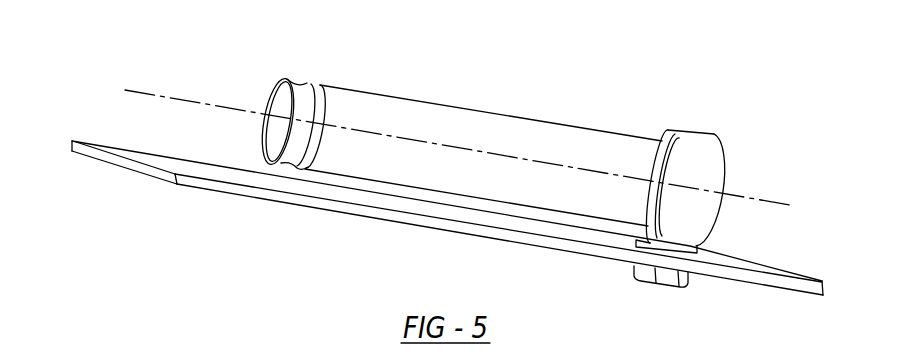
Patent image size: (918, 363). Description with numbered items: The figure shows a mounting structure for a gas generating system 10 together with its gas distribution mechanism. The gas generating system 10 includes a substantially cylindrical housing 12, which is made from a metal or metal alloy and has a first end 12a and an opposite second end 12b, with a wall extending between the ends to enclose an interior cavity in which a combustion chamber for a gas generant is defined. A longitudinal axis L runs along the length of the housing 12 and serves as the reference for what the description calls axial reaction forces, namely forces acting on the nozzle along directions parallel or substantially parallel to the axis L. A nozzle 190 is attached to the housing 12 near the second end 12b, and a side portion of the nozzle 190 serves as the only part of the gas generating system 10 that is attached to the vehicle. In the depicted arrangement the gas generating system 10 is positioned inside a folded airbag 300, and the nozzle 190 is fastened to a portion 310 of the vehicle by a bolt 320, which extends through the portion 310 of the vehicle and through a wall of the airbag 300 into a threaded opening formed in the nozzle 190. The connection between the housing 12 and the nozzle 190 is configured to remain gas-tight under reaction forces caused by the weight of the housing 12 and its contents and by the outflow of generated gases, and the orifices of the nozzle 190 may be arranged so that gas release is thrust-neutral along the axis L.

The gas generating system 10 is at (617, 54).
The housing 12 is at (525, 118).
The first end 12a is at (372, 103).
The second end 12b is at (608, 147).
The nozzle 190 is at (701, 129).
The folded airbag 300 is at (447, 218).
The portion of the vehicle 310 is at (392, 223).
The bolt 320 is at (656, 284).
The longitudinal axis L is at (766, 199).